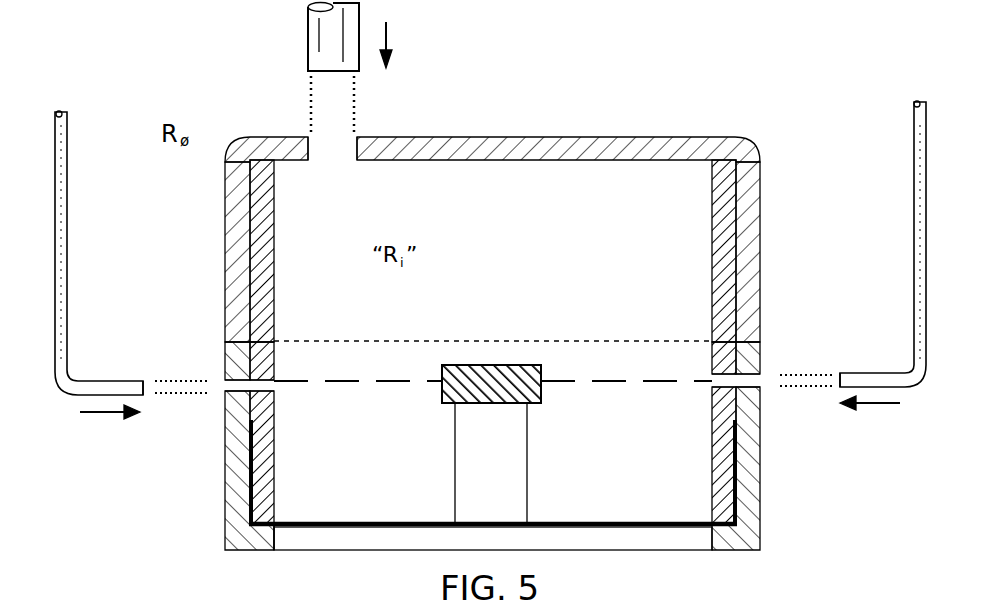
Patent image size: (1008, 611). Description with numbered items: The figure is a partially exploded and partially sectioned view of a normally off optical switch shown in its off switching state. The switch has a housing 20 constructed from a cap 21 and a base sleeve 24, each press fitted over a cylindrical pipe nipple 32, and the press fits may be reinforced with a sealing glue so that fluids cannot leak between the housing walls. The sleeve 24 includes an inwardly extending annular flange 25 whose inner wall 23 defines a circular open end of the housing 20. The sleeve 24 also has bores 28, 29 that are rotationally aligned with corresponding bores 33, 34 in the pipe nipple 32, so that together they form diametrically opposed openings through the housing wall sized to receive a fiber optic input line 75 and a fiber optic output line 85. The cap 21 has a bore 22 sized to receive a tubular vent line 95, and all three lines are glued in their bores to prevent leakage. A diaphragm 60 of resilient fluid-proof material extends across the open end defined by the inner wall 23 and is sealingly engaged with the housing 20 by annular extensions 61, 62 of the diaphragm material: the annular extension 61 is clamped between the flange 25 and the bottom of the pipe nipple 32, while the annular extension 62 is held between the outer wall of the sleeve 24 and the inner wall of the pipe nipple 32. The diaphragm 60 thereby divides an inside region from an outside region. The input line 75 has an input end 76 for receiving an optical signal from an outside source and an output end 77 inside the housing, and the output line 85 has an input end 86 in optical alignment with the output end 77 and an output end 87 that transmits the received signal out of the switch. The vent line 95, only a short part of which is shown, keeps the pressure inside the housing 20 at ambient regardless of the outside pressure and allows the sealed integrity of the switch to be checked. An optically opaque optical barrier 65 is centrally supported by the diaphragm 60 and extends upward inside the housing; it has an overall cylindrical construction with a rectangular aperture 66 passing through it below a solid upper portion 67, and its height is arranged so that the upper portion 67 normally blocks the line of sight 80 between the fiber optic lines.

The housing 20 is at (762, 131).
The cap 21 is at (503, 137).
The bore 22 is at (333, 152).
The inner wall 23 is at (710, 533).
The base sleeve 24 is at (232, 476).
The annular flange 25 is at (275, 532).
The bore 28 is at (227, 383).
The bore 29 is at (753, 383).
The pipe nipple 32 is at (714, 275).
The bore 33 is at (273, 384).
The bore 34 is at (708, 382).
The diaphragm 60 is at (558, 519).
The annular extension 61 is at (275, 502).
The annular extension 62 is at (257, 450).
The optical barrier 65 is at (445, 428).
The aperture 66 is at (512, 443).
The upper portion 67 is at (448, 372).
The fiber optic input line 75 is at (66, 212).
The input end 76 is at (61, 112).
The output end 77 is at (146, 382).
The line of sight 80 is at (560, 382).
The fiber optic output line 85 is at (914, 204).
The input end 86 is at (837, 373).
The output end 87 is at (918, 100).
The vent line 95 is at (318, 46).